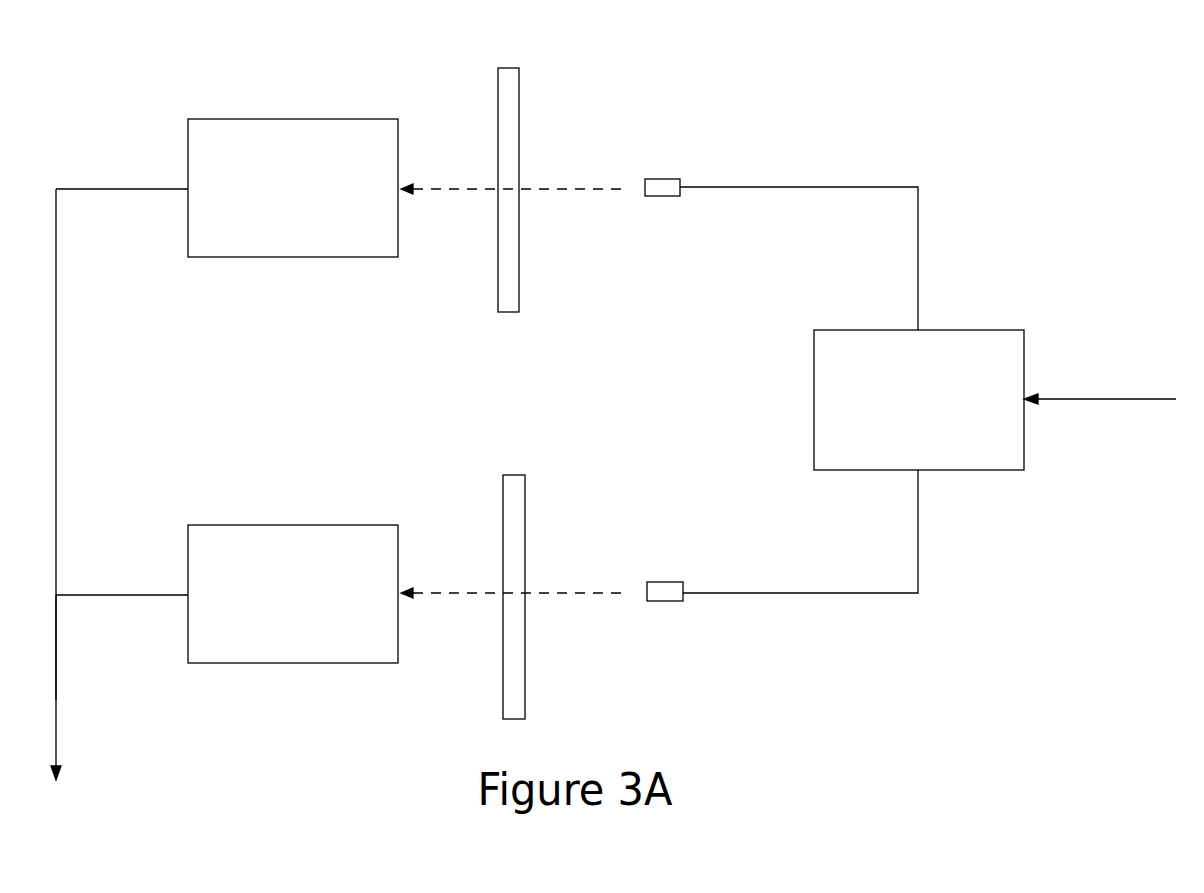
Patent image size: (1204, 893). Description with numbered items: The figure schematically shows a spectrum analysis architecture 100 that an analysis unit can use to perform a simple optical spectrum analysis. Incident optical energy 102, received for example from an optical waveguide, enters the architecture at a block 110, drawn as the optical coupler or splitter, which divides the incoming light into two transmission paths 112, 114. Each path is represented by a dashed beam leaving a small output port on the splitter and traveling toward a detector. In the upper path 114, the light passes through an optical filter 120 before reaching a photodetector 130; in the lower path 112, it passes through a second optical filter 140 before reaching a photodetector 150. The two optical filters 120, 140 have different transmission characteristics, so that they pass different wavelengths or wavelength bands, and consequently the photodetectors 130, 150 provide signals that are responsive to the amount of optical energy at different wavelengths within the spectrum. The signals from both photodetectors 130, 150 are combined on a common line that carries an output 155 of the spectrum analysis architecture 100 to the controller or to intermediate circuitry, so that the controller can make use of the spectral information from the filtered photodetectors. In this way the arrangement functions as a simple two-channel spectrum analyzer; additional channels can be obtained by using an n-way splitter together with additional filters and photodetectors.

The spectrum analysis architecture 100 is at (652, 76).
The incident optical energy 102 is at (1100, 386).
The beam splitter / light source unit 110 is at (919, 400).
The transmission path 112 is at (569, 585).
The transmission path 114 is at (560, 197).
The optical filter 120 is at (508, 173).
The photodetector 130 is at (408, 188).
The optical filter 140 is at (513, 580).
The photodetector 150 is at (408, 594).
The output 155 is at (68, 688).